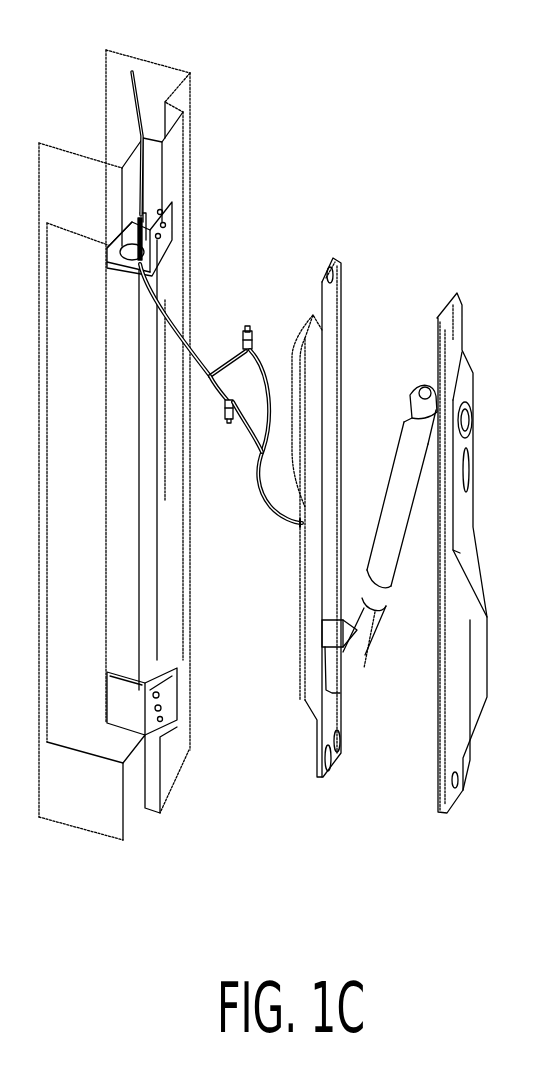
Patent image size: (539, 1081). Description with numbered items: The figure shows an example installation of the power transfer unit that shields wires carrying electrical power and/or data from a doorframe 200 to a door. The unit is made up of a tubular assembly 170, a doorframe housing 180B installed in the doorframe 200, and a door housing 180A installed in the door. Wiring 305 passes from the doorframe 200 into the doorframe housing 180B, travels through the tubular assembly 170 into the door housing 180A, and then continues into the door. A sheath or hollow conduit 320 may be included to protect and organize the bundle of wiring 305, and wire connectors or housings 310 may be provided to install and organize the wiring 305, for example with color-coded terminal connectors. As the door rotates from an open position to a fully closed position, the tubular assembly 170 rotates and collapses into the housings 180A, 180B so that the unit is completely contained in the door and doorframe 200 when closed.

The doorframe 200 is at (70, 195).
The wiring 305 is at (257, 340).
The wire connectors or housings 310 is at (226, 424).
The sheath or hollow conduit 320 is at (287, 526).
The tubular assembly 170 is at (383, 503).
The door housing 180A is at (455, 350).
The doorframe housing 180B is at (313, 621).